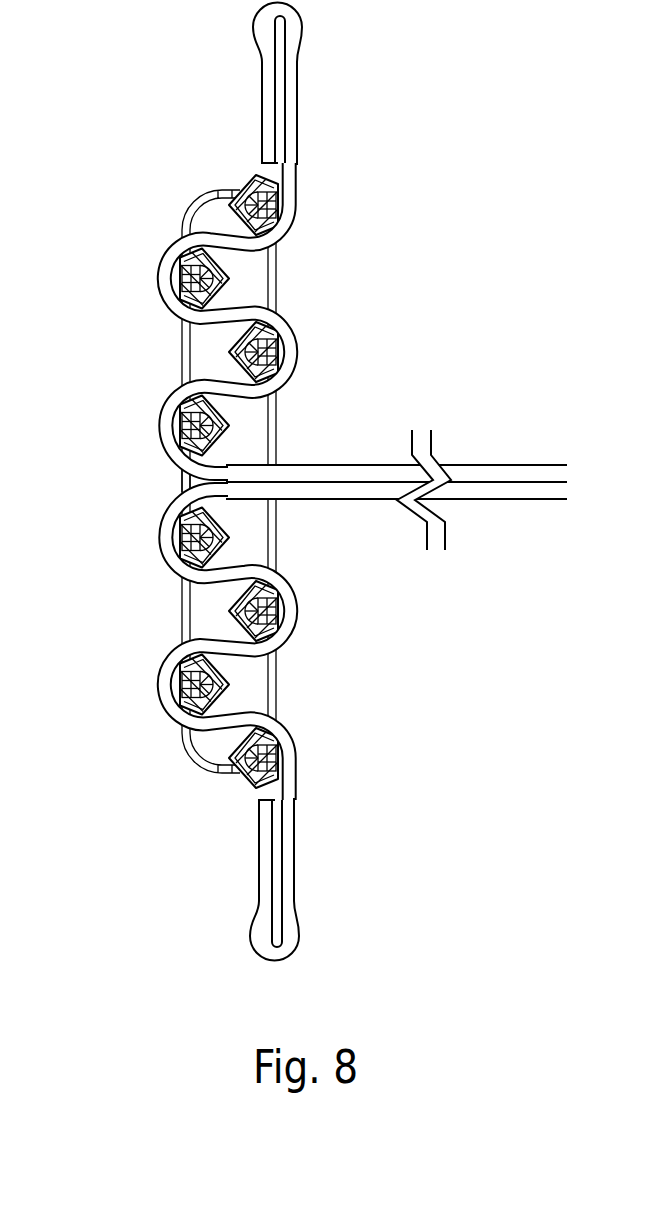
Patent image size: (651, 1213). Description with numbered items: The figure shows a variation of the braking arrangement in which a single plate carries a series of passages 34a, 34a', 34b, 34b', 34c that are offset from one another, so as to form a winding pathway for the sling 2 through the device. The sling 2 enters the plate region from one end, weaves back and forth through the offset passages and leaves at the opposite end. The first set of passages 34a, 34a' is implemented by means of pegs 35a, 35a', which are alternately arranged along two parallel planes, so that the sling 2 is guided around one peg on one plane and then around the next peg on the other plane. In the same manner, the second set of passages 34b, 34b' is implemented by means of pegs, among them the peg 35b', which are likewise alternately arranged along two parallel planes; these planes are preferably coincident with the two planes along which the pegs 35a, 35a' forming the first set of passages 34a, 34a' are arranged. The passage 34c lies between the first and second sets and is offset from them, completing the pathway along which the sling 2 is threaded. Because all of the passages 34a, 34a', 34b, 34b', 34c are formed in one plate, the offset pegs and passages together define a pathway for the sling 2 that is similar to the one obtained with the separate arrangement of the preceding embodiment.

The sling 2 is at (297, 103).
The passage 34a is at (146, 335).
The passage 34b is at (146, 627).
The passage 34c is at (188, 481).
The passage 34a' is at (340, 350).
The passage 34b' is at (340, 604).
The peg 35a is at (141, 255).
The peg 35a' is at (321, 341).
The peg 35b' is at (231, 561).